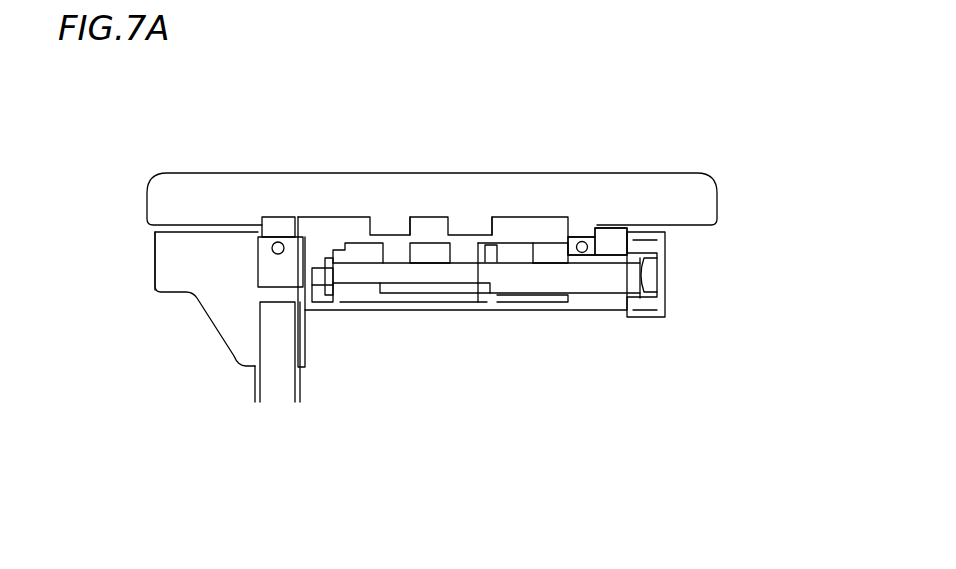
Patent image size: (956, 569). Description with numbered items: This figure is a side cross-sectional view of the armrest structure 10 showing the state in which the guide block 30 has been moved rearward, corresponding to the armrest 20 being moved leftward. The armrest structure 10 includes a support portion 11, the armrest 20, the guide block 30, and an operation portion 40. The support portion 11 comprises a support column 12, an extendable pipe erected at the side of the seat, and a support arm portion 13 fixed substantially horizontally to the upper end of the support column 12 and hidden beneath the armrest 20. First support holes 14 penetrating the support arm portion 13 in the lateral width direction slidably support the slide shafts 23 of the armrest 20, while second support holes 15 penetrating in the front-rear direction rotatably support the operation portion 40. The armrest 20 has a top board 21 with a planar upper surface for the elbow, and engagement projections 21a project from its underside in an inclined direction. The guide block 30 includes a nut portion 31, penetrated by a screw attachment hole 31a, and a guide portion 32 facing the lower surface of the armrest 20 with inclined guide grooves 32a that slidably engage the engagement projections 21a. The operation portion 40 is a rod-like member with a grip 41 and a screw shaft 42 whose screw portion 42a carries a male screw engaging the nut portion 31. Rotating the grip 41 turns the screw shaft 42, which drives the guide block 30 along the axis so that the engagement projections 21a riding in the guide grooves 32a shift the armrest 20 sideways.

The armrest structure 10 is at (722, 160).
The support portion 11 is at (222, 352).
The support column 12 is at (302, 387).
The support arm portion 13 is at (202, 313).
The first support hole 14 is at (272, 250).
The second support hole 15 is at (352, 288).
The armrest 20 is at (722, 190).
The top board 21 is at (637, 226).
The engagement projection 21a is at (360, 218).
The slide shaft 23 is at (277, 218).
The guide block 30 is at (463, 298).
The nut portion 31 is at (437, 298).
The screw attachment hole 31a is at (420, 270).
The guide portion 32 is at (538, 217).
The guide groove 32a is at (390, 288).
The operation portion 40 is at (672, 297).
The grip 41 is at (665, 275).
The screw shaft 42 is at (547, 292).
The screw portion 42a is at (440, 248).